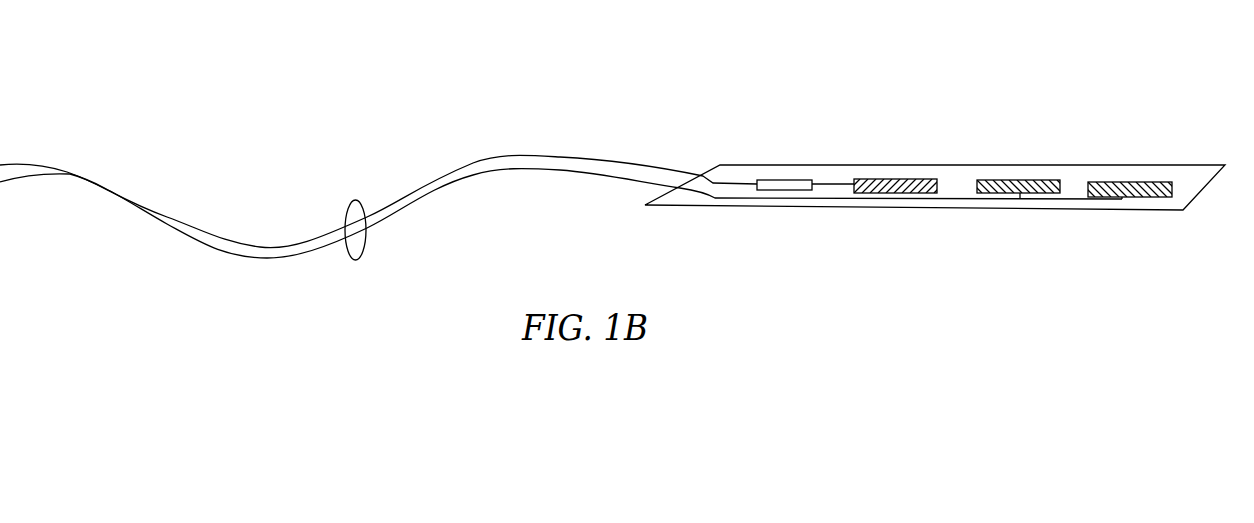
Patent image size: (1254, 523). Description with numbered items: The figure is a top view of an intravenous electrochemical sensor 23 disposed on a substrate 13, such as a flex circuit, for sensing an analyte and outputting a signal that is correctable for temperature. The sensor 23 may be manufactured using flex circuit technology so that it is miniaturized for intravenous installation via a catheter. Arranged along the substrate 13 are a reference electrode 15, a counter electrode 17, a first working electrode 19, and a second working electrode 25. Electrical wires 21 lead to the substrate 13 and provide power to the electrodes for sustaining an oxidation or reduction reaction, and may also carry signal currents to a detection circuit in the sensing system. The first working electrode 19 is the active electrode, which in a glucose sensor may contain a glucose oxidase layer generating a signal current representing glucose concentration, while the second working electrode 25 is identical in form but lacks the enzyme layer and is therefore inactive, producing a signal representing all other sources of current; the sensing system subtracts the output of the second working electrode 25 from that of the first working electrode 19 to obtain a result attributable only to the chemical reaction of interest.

The sensor 23 is at (583, 47).
The electrical wires 21 is at (353, 200).
The substrate 13 is at (735, 173).
The reference electrode 15 is at (792, 180).
The counter electrode 17 is at (883, 179).
The first working electrode 19 is at (1017, 180).
The second working electrode 25 is at (1130, 182).